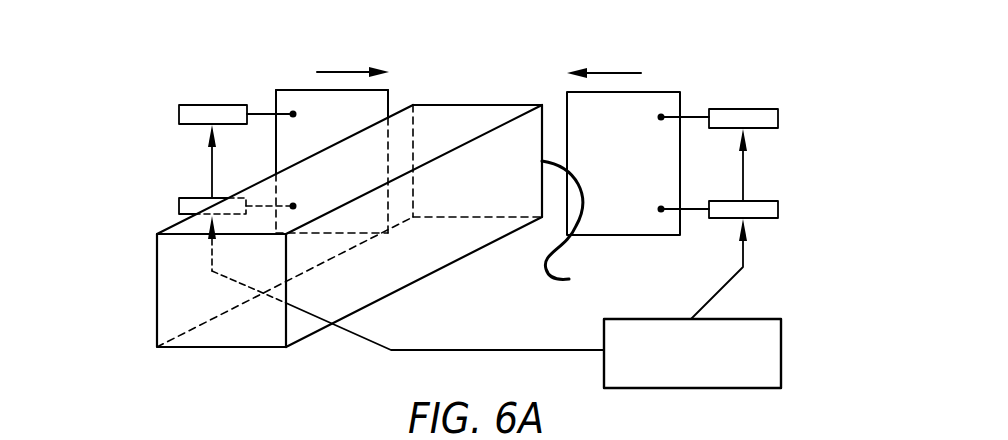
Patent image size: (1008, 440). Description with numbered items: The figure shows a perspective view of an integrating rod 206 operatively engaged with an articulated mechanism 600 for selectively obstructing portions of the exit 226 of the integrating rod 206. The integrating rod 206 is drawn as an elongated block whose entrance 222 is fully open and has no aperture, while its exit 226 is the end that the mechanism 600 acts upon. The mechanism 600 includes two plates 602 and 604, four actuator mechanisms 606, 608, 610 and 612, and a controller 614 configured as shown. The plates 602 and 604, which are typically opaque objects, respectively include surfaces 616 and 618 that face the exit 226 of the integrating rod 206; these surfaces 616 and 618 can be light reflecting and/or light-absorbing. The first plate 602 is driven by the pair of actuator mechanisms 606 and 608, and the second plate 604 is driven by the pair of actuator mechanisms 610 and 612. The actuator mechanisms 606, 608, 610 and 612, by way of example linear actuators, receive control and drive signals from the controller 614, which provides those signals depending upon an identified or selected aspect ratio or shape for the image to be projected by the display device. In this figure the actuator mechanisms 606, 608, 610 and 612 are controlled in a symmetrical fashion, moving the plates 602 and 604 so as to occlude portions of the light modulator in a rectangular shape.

The mechanism 600 is at (773, 44).
The integrating rod 206 is at (150, 228).
The entrance 222 is at (173, 319).
The exit 226 is at (575, 227).
The plate 602 is at (300, 89).
The plate 604 is at (651, 91).
The actuator mechanism 606 is at (178, 112).
The actuator mechanism 608 is at (178, 205).
The actuator mechanism 610 is at (777, 118).
The actuator mechanism 612 is at (777, 208).
The controller 614 is at (780, 353).
The surface 616 is at (288, 100).
The surface 618 is at (669, 103).